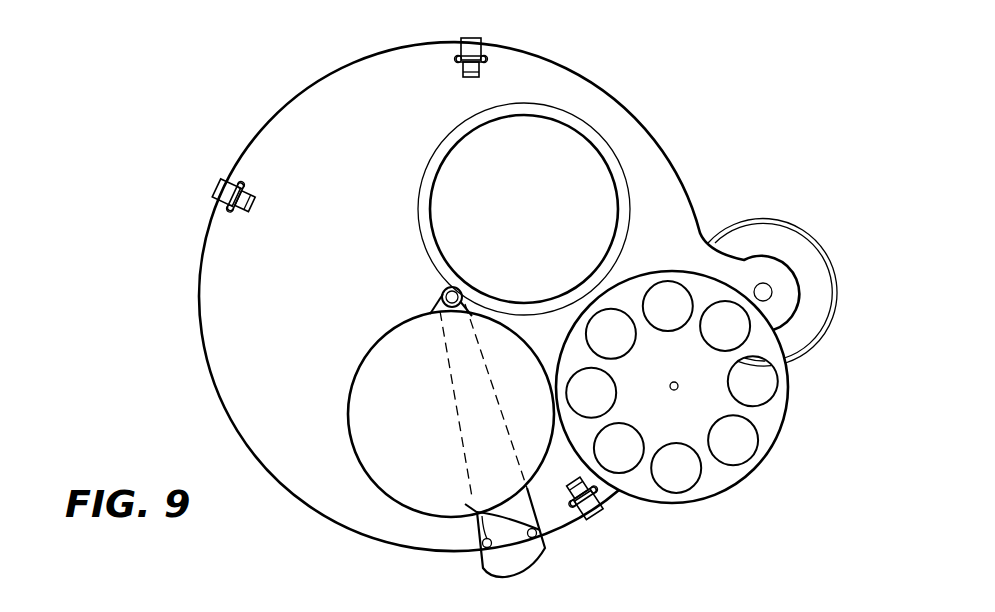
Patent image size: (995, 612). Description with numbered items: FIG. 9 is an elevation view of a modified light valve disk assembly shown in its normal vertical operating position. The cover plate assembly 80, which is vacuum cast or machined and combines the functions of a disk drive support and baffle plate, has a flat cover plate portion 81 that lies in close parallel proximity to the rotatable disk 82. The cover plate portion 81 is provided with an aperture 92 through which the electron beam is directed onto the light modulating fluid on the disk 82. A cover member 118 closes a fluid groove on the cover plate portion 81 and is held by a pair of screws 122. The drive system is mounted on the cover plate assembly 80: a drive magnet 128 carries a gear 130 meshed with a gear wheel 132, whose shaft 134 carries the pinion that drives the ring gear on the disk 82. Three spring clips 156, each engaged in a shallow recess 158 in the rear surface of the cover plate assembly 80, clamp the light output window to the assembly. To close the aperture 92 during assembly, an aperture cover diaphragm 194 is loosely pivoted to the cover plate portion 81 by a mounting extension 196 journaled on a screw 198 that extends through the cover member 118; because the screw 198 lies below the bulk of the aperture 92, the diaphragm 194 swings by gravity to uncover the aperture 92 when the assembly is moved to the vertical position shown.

The cover plate assembly 80 is at (294, 101).
The cover plate portion 81 is at (320, 252).
The rotatable disk 82 is at (560, 148).
The aperture 92 is at (607, 177).
The cover member 118 is at (490, 568).
The screws 122 is at (465, 504).
The drive magnet 128 is at (808, 240).
The gear 130 is at (763, 289).
The gear wheel 132 is at (780, 410).
The shaft 134 is at (678, 382).
The spring clips 156 is at (463, 42).
The recess 158 is at (486, 57).
The aperture cover diaphragm 194 is at (357, 408).
The mounting extension 196 is at (440, 291).
The screw 198 is at (453, 292).